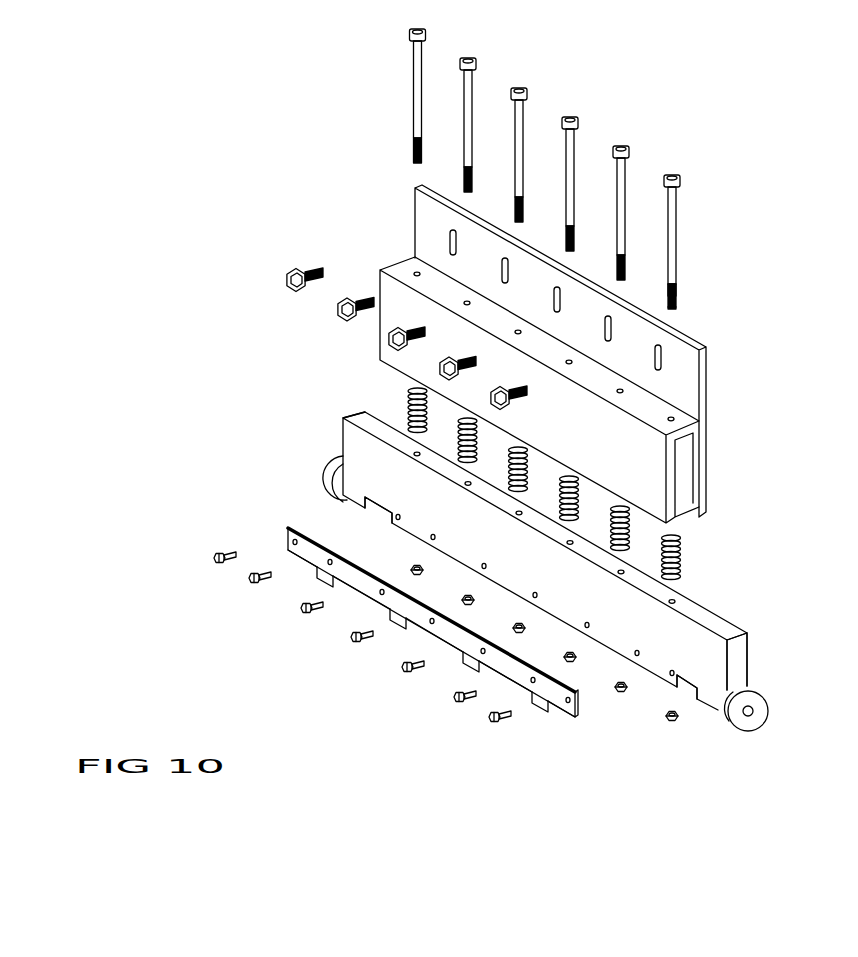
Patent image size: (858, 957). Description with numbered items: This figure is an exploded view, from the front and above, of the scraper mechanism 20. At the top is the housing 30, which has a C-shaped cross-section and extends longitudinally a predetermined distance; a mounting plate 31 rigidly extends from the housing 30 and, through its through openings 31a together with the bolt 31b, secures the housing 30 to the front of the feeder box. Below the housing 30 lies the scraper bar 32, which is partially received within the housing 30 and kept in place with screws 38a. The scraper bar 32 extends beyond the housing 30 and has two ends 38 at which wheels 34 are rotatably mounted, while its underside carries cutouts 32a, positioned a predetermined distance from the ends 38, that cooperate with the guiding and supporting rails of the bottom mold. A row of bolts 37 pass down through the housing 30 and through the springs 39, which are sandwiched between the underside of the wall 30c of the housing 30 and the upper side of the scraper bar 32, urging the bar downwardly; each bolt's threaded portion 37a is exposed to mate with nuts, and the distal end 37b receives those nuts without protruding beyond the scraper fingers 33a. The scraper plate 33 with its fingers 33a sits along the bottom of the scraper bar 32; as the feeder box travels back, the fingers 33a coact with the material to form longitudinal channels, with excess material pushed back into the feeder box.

The scraper mechanism 20 is at (758, 100).
The housing 30 is at (643, 470).
The wall 30c is at (358, 417).
The mounting plate 31 is at (708, 398).
The through openings 31a is at (450, 240).
The bolt 31b is at (285, 277).
The scraper bar 32 is at (757, 629).
The cutouts 32a is at (382, 508).
The scraper plate 33 is at (576, 707).
The scraper fingers 33a is at (417, 270).
The wheels 34 is at (759, 728).
The bolts 37 is at (677, 220).
The threaded portion 37a is at (676, 302).
The distal end 37b is at (672, 310).
The ends 38 is at (342, 445).
The screws 38a is at (223, 552).
The springs 39 is at (682, 562).